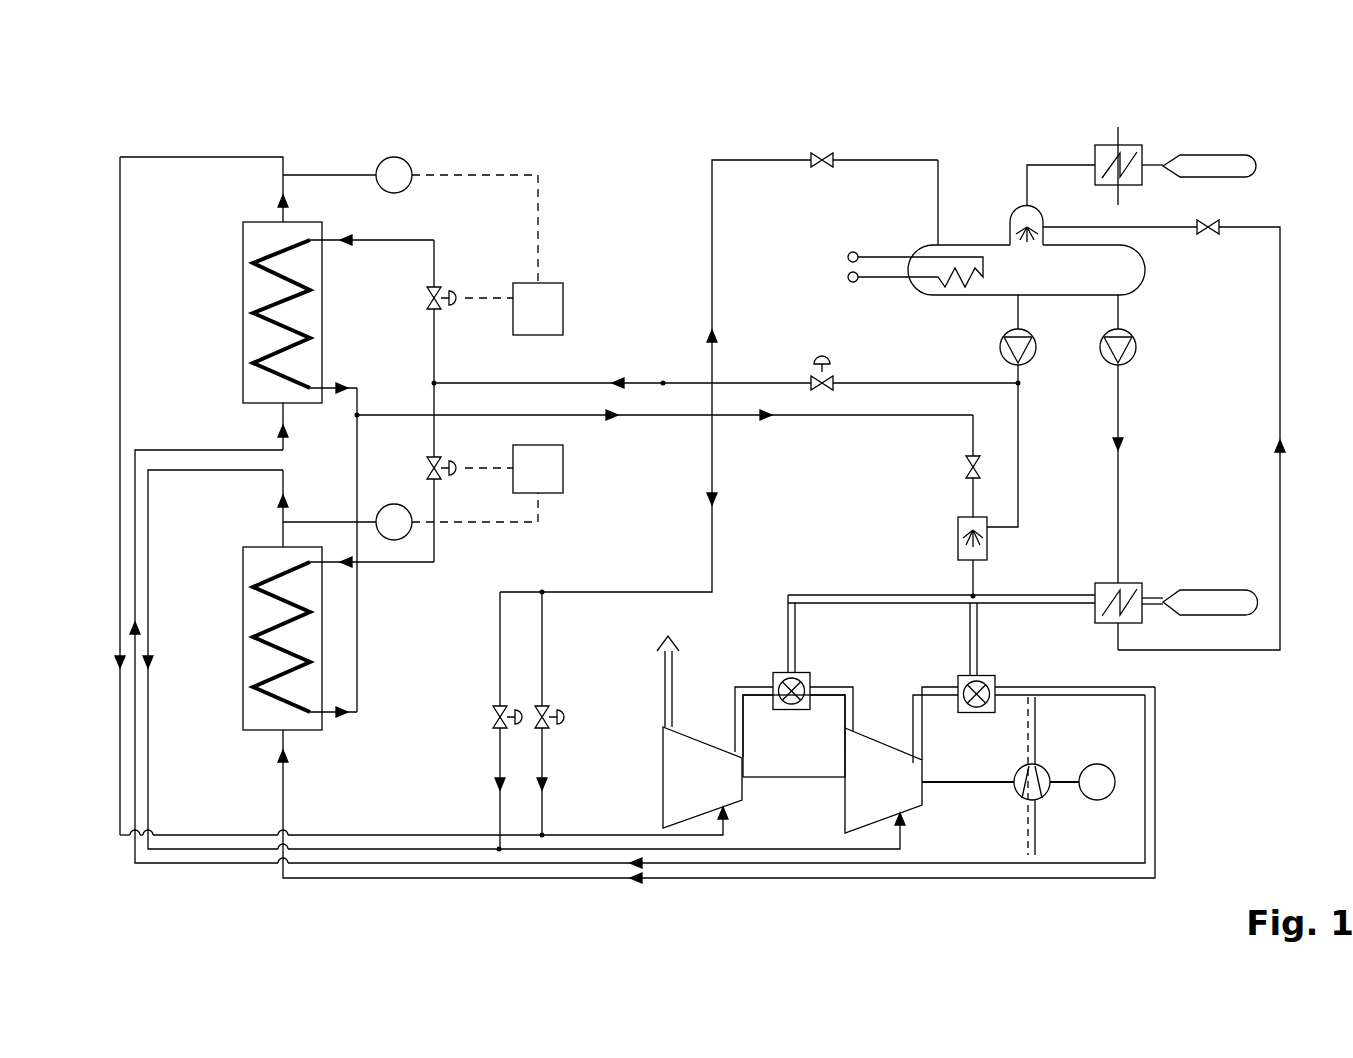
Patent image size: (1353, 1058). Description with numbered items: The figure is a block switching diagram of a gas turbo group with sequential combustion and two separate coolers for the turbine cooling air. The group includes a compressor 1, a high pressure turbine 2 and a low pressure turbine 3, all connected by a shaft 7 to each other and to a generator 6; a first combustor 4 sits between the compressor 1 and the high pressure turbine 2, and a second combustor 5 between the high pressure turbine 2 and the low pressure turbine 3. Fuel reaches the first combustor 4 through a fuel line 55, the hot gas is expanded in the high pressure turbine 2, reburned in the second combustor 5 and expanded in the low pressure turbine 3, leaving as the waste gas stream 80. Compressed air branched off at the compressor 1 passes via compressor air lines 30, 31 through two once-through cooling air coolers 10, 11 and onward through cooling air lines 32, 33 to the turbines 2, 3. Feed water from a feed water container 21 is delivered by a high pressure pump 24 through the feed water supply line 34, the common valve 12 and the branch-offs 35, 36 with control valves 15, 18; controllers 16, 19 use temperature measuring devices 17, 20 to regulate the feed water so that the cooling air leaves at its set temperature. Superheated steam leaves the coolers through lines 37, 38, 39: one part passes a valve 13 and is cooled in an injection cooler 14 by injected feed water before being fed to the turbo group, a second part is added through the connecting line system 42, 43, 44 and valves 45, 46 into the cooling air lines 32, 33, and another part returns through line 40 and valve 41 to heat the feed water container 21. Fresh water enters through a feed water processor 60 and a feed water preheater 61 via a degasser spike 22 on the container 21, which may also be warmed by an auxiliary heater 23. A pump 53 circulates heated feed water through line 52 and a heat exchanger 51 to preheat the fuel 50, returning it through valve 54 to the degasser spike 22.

The compressor 1 is at (1041, 820).
The first turbine (high pressure turbine) 2 is at (873, 790).
The second turbine (low pressure turbine) 3 is at (692, 780).
The first combustor 4 is at (995, 680).
The second combustor 5 is at (805, 678).
The generator 6 is at (1095, 800).
The shaft 7 is at (783, 778).
The cooling air cooler 10 is at (258, 702).
The cooling air cooler 11 is at (258, 243).
The valve 12 is at (810, 372).
The valve 13 is at (962, 467).
The injection cooler 14 is at (965, 535).
The control valve 15 is at (445, 460).
The controller 16 is at (553, 485).
The temperature measuring device 17 is at (400, 540).
The control valve 18 is at (443, 298).
The controller 19 is at (548, 297).
The temperature measuring device 20 is at (394, 157).
The feed water container 21 is at (1070, 263).
The degasser spike 22 is at (1029, 165).
The auxiliary heater 23 is at (888, 257).
The high pressure pump 24 is at (1170, 411).
The compressor air line 30 is at (383, 878).
The compressor air line 31 is at (322, 863).
The cooling air line 32 is at (243, 849).
The cooling air line 33 is at (185, 835).
The feed water supply line 34 is at (663, 383).
The branch-off of the feed water supply line 35 is at (239, 435).
The branch-off of the feed water supply line 36 is at (238, 286).
The steam line 37 is at (200, 563).
The steam line 38 is at (201, 407).
The steam line 39 is at (665, 420).
The line 40 is at (748, 160).
The valve 41 is at (822, 152).
The connecting line system 42 is at (712, 533).
The connecting line 43 is at (542, 657).
The connecting line 44 is at (500, 657).
The valve 45 is at (559, 824).
The valve 46 is at (486, 824).
The fuel 50 is at (1227, 603).
The heat exchanger 51 is at (1224, 572).
The line 52 is at (1120, 475).
The pump 53 is at (1136, 347).
The valve 54 is at (1198, 435).
The fuel line 55 is at (833, 597).
The feed water processor 60 is at (1225, 167).
The feed water preheater 61 is at (1132, 157).
The waste gas stream 80 is at (667, 635).